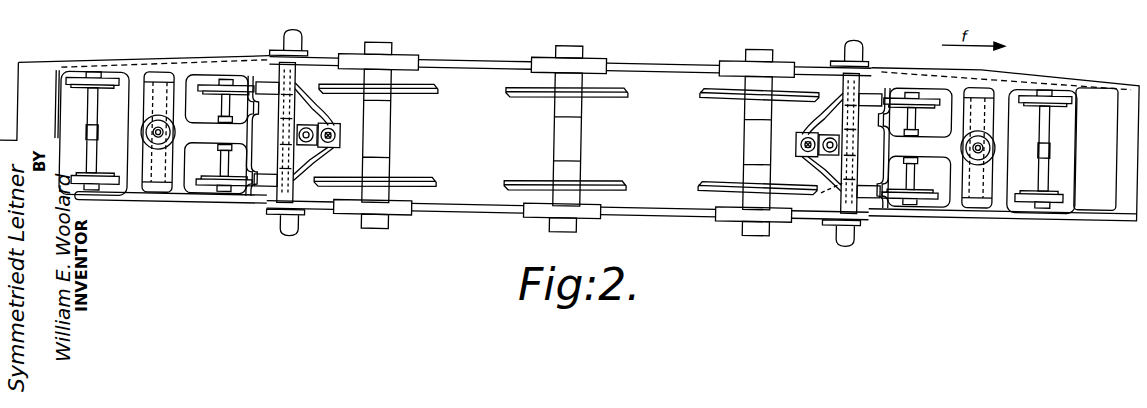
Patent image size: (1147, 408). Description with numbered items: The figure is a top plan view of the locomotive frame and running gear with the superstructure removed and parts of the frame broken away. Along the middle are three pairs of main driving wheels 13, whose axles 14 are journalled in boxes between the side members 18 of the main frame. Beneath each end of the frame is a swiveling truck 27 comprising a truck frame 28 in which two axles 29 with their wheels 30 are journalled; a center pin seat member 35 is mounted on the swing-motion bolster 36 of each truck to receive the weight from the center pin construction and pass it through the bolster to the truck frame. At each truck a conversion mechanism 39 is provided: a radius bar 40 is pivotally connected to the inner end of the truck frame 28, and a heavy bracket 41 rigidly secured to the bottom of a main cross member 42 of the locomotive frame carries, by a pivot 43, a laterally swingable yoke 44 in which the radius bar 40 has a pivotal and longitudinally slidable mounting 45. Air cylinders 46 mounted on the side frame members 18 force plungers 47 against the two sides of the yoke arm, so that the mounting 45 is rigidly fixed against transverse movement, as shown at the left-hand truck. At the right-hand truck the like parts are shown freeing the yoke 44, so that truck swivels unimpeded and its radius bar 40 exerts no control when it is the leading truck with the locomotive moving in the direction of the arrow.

The main or driving wheels 13 is at (437, 91).
The axles 14 is at (388, 134).
The side members of the main frame 18 is at (480, 62).
The swiveling truck 27 is at (568, 142).
The truck frame 28 is at (190, 78).
The axles 29 is at (90, 152).
The wheels 30 is at (105, 88).
The center pin seat member 35 is at (176, 141).
The swing-motion bolster 36 is at (160, 185).
The conversion mechanism 39 is at (568, 142).
The radius bar 40 is at (300, 97).
The bracket 41 is at (306, 175).
The main cross member 42 is at (298, 72).
The pivot 43 is at (312, 146).
The radius bar pivot mounting member or yoke 44 is at (340, 139).
The movable mounting 45 is at (330, 133).
The air cylinders 46 is at (289, 35).
The plungers 47 is at (822, 188).